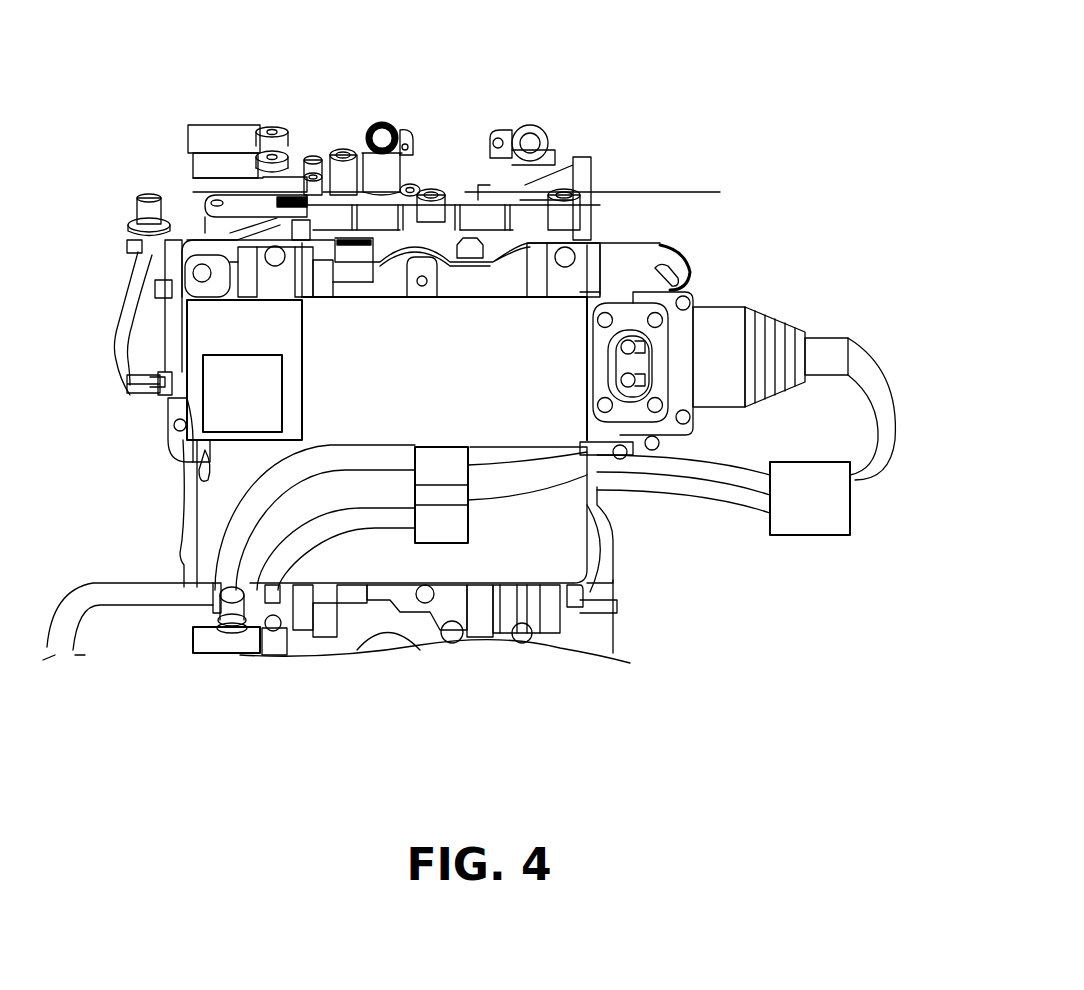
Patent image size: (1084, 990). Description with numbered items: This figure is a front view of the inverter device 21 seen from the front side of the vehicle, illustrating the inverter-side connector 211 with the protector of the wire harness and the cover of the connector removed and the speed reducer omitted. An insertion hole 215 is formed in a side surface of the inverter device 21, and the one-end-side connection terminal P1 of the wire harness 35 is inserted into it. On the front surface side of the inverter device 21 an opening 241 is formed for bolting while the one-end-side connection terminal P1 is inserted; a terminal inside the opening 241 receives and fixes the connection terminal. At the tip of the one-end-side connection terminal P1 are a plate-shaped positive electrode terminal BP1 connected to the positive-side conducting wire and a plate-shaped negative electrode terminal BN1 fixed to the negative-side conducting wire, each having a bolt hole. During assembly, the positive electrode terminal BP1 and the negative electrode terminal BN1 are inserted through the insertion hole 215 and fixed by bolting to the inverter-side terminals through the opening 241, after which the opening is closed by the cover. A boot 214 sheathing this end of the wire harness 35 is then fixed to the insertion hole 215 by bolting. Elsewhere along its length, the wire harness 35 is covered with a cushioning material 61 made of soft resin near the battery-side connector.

The inverter device 21 is at (456, 345).
The inverter-side connector 211 is at (627, 300).
The boot 214 is at (697, 308).
The insertion hole 215 is at (695, 382).
The opening 241 is at (628, 397).
The positive electrode terminal BP1 is at (642, 342).
The negative electrode terminal BN1 is at (642, 383).
The one-end-side connection terminal P1 is at (887, 212).
The wire harness 35 is at (866, 487).
The cushioning material 61 is at (233, 530).